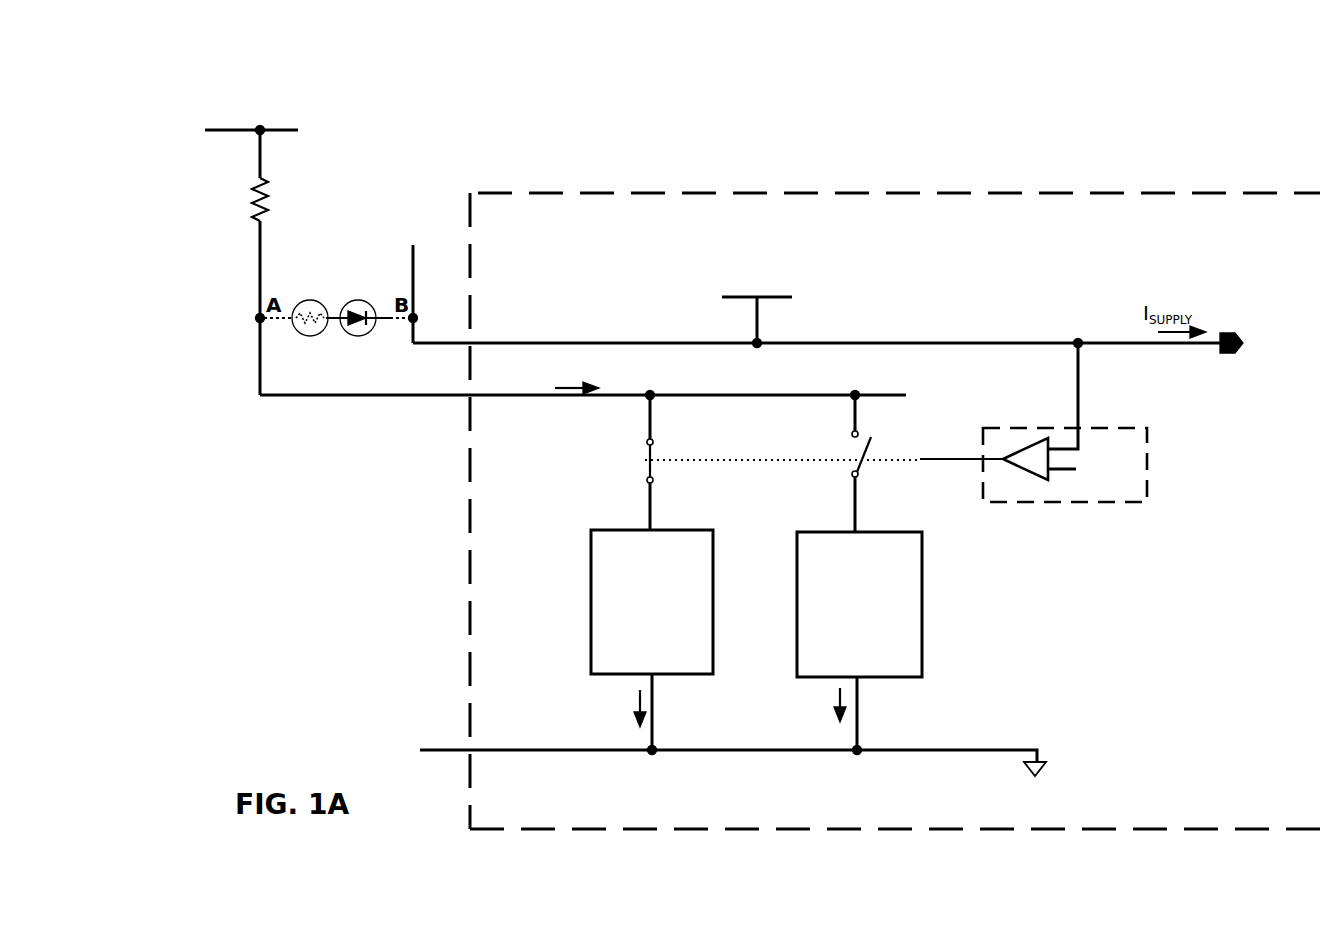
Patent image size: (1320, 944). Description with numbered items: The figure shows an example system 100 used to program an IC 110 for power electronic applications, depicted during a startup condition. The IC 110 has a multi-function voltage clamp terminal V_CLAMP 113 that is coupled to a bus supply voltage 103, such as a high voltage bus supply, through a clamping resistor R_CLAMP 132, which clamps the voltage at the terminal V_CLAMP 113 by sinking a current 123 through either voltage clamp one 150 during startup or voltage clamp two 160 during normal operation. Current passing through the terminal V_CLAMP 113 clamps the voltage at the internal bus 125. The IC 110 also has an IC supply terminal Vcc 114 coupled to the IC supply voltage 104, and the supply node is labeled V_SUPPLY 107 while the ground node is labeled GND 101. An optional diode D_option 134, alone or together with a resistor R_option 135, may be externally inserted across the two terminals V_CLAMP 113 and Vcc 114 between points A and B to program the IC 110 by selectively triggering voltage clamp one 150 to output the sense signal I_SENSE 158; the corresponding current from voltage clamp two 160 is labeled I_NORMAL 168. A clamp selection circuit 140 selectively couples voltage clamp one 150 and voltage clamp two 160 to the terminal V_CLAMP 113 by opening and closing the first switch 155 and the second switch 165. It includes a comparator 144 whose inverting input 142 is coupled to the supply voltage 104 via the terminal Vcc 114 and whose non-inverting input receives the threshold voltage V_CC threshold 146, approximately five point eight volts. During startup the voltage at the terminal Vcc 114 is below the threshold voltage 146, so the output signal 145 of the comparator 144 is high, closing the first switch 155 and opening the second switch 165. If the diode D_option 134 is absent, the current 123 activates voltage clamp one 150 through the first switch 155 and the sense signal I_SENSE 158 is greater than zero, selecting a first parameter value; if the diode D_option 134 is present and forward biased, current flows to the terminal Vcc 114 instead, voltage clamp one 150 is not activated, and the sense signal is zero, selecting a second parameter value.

The system 100 is at (1255, 87).
The ground 101 is at (418, 749).
The bus supply voltage 103 is at (250, 93).
The IC supply voltage 104 is at (778, 280).
The supply voltage Vsupply 107 is at (556, 316).
The IC 110 is at (957, 187).
The multi-function voltage clamp terminal V_CLAMP 113 is at (451, 405).
The IC supply terminal Vcc 114 is at (440, 312).
The current 123 is at (557, 382).
The bus 125 is at (907, 358).
The clamping resistor R_CLAMP 132 is at (238, 222).
The diode D_option 134 is at (385, 283).
The resistor R_option 135 is at (318, 283).
The clamp selection circuit 140 is at (1102, 421).
The inverting input 142 is at (1055, 442).
The comparator 144 is at (1013, 448).
The output signal 145 is at (960, 467).
The threshold voltage V_CC threshold 146 is at (1118, 472).
The voltage clamp 1 150 is at (720, 555).
The switch S1 155 is at (615, 470).
The sense signal I_SENSE 158 is at (595, 718).
The voltage clamp 2 160 is at (932, 640).
The switch S2 165 is at (835, 460).
The normal current Inormal 168 is at (810, 710).